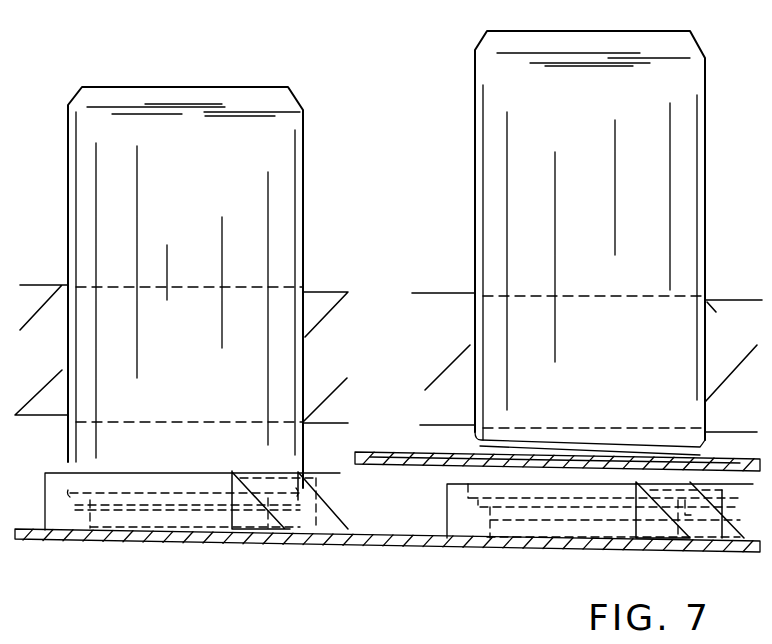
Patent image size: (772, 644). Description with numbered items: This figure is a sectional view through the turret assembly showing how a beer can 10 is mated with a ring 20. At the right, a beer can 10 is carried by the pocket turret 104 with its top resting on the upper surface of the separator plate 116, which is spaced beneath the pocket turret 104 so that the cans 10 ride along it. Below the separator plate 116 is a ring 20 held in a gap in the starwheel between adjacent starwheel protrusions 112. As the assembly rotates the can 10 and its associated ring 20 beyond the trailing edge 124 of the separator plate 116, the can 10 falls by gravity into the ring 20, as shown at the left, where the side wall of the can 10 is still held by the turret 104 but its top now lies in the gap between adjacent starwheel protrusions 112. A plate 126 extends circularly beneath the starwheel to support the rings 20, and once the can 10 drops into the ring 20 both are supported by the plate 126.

The beer can 10 is at (293, 125).
The pocket turret 104 is at (35, 300).
The trailing edge 124 is at (357, 436).
The separator plate 116 is at (420, 465).
The ring 20 is at (45, 498).
The starwheel protrusion 112 is at (330, 531).
The plate 126 is at (193, 545).